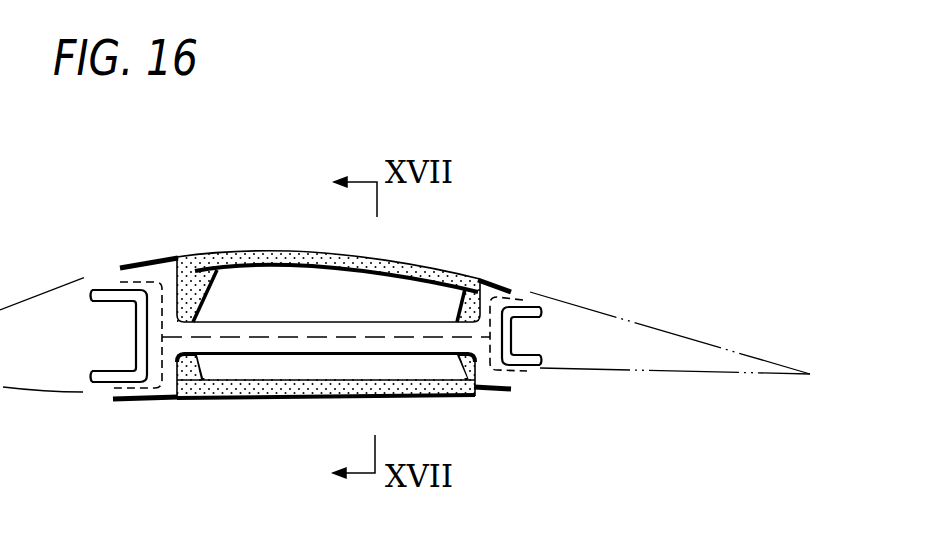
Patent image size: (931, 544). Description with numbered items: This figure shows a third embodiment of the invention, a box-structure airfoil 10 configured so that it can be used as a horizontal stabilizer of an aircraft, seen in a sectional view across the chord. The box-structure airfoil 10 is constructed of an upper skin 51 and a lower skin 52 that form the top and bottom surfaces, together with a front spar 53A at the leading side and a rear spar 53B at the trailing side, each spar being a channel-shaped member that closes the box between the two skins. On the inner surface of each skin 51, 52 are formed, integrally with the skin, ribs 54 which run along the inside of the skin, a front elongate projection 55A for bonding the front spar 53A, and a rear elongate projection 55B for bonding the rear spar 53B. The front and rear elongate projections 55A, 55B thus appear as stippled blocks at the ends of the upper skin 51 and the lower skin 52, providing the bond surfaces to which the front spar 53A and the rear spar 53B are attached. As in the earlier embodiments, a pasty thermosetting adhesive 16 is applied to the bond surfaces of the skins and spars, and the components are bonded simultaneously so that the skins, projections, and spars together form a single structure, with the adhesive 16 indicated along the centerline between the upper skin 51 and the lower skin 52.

The box-structure airfoil 10 is at (466, 214).
The pasty thermosetting adhesive 16 is at (303, 336).
The upper skin 51 is at (263, 253).
The lower skin 52 is at (234, 392).
The front spar 53A is at (93, 282).
The rear spar 53B is at (530, 293).
The ribs 54 is at (413, 297).
The front elongate projection 55A is at (192, 283).
The rear elongate projection 55B is at (463, 281).